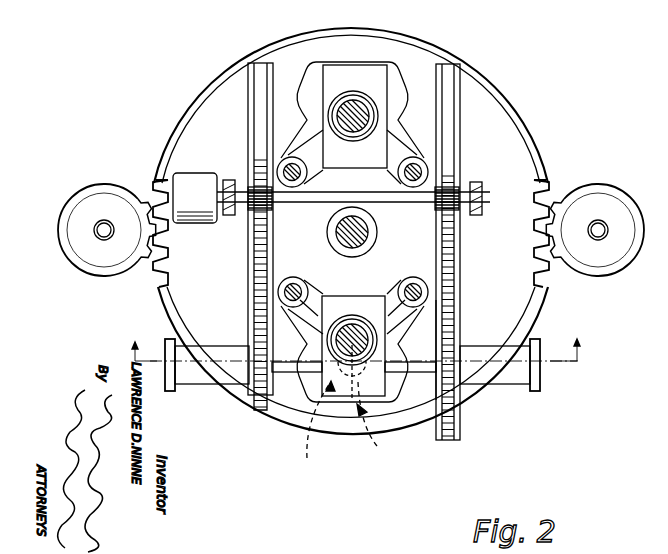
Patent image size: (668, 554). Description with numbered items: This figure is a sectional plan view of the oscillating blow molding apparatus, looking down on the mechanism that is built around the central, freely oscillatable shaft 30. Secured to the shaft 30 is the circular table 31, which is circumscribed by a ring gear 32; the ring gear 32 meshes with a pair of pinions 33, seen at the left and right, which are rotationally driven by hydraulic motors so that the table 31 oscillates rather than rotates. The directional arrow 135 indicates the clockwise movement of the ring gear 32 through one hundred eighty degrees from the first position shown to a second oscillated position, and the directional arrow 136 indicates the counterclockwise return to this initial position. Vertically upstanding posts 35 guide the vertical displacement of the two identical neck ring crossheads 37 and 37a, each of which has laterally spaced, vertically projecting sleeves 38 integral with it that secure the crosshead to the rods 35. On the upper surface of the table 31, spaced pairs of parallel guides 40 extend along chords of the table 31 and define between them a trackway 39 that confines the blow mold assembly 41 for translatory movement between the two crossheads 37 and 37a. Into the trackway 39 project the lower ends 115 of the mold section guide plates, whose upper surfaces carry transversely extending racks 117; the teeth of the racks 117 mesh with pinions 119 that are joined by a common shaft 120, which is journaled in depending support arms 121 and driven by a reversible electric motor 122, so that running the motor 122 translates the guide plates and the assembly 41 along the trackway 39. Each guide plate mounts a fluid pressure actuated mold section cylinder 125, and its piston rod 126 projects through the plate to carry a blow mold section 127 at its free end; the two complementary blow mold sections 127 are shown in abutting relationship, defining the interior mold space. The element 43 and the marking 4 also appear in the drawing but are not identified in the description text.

The shaft 30 is at (372, 233).
The table 31 is at (340, 430).
The ring gear 32 is at (147, 267).
The pinions 33 is at (87, 263).
The posts 35 is at (292, 158).
The neck ring crosshead 37 is at (341, 72).
The neck ring crosshead 37a is at (364, 300).
The sleeves 38 is at (306, 288).
The trackway 39 is at (258, 107).
The parallel guides 40 is at (248, 128).
The blow mold assembly 41 is at (317, 429).
The pulley shaft 43 is at (358, 107).
The lower ends 115 is at (400, 72).
The racks 117 is at (448, 261).
The pinions 119 is at (257, 217).
The common shaft 120 is at (313, 205).
The support arms 121 is at (228, 179).
The reversible electric motor 122 is at (197, 225).
The mold section cylinder 125 is at (192, 379).
The piston rod 126 is at (264, 410).
The blow mold section 127 is at (373, 400).
The directional arrow 135 is at (530, 67).
The directional arrow 136 is at (467, 434).
The section line 4- 4 is at (357, 339).